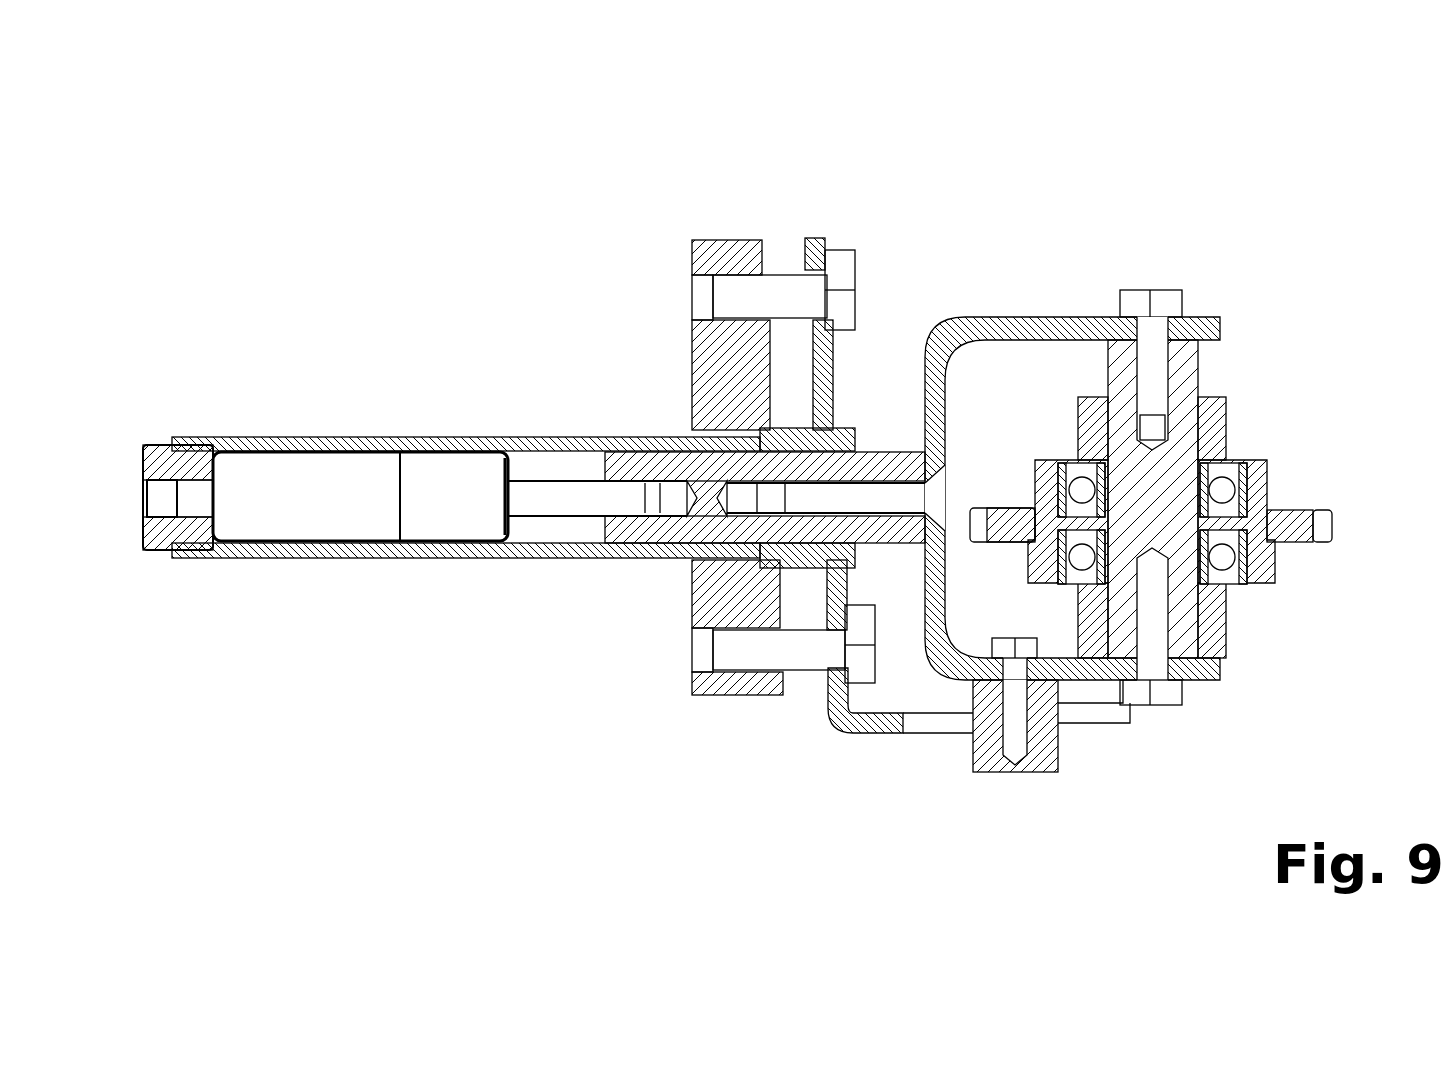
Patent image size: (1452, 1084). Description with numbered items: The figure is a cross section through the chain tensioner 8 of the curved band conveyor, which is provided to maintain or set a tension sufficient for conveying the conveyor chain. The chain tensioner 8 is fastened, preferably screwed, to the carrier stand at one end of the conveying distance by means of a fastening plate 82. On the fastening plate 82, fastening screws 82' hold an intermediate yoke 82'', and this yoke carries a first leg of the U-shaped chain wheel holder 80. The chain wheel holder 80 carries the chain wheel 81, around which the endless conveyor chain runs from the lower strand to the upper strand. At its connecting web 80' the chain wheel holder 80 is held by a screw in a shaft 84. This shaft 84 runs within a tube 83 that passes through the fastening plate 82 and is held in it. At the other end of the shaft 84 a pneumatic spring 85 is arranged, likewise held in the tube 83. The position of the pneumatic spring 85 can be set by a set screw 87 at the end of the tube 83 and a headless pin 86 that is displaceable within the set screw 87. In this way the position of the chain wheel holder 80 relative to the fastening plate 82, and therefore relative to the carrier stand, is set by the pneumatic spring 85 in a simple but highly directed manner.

The chain tensioner 8 is at (684, 188).
The chain wheel holder 80 is at (1100, 427).
The connecting web 80' is at (975, 754).
The chain wheel 81 is at (1290, 545).
The fastening plate 82 is at (690, 467).
The fastening screws 82' is at (794, 416).
The intermediate yoke 82'' is at (890, 390).
The tube 83 is at (498, 437).
The shaft 84 is at (648, 533).
The pneumatic spring 85 is at (431, 500).
The headless pin 86 is at (162, 500).
The set screw 87 is at (163, 445).